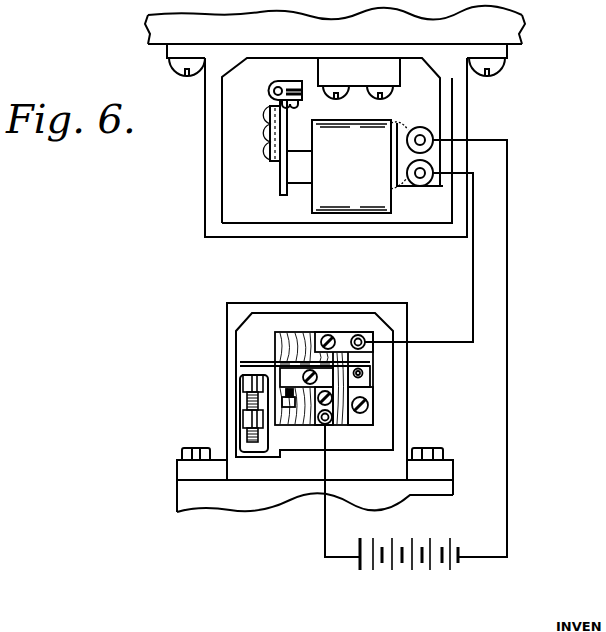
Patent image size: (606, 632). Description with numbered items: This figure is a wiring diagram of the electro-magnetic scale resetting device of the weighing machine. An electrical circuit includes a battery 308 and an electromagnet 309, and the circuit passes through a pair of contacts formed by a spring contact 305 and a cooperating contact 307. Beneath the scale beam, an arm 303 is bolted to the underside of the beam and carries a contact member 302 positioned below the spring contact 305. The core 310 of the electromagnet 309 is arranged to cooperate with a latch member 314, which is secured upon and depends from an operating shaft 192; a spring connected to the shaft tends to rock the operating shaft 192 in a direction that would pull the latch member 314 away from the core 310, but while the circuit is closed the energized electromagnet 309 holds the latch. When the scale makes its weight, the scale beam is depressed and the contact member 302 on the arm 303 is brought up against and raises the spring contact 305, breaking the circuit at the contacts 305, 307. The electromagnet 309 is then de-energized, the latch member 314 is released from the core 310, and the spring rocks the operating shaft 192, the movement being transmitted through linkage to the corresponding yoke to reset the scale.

The operating shaft 192 is at (273, 94).
The latch member 314 is at (280, 179).
The core 310 is at (299, 185).
The electromagnet 309 is at (355, 214).
The spring contact 305 is at (247, 361).
The contact 307 is at (285, 375).
The contact member 302 is at (243, 383).
The arm 303 is at (243, 422).
The battery 308 is at (360, 562).